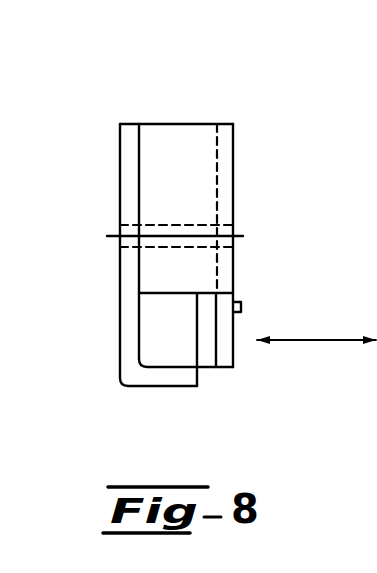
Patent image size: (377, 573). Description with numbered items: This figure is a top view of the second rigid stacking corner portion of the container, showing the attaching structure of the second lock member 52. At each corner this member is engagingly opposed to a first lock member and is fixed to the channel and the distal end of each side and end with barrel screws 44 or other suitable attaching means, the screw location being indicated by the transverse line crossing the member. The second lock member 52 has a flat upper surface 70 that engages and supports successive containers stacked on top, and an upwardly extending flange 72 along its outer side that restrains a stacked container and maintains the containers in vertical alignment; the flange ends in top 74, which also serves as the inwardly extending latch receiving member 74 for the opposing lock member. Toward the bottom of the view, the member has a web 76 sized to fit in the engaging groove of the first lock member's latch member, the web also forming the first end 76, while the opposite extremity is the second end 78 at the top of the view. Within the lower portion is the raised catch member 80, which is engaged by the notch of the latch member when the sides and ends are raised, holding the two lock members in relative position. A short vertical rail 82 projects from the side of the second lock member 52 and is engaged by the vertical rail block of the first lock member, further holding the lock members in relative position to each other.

The second lock member 52 is at (130, 76).
The second end 78 is at (190, 124).
The latch receiving member 74 is at (132, 152).
The upwardly extending flange 72 is at (120, 200).
The flat upper surface 70 is at (192, 152).
The barrel screws 44 is at (203, 231).
The web 76 is at (197, 377).
The raised catch member 80 is at (207, 350).
The vertical rail 82 is at (242, 305).